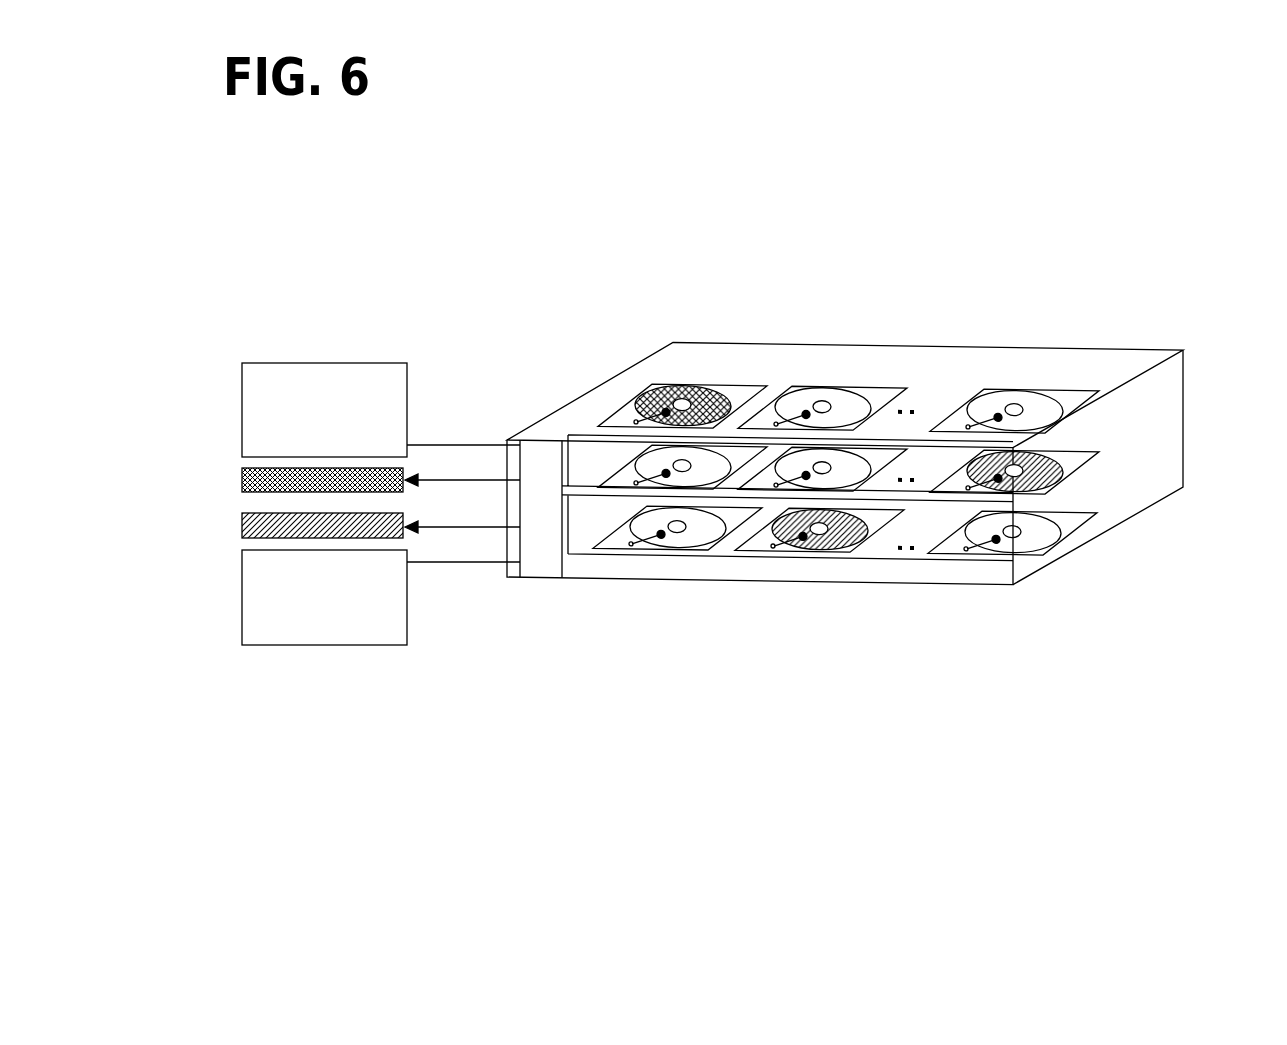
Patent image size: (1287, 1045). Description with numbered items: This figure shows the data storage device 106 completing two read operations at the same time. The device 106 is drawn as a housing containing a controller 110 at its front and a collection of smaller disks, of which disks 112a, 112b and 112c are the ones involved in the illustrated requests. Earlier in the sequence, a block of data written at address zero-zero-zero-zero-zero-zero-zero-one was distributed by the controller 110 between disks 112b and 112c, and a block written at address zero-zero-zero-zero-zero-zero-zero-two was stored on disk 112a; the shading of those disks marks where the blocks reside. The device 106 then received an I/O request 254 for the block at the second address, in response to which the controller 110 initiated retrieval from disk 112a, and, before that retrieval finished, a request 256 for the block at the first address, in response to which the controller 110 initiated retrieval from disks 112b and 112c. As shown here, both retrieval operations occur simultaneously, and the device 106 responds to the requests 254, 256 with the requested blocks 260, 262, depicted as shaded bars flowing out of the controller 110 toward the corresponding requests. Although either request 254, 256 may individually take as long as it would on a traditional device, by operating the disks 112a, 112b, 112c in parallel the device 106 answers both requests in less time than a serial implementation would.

The device 106 is at (1160, 589).
The controller 110 is at (540, 575).
The disk 112a is at (703, 383).
The disk 112b is at (1082, 446).
The disk 112c is at (825, 548).
The I/O request 254 is at (323, 363).
The request 256 is at (320, 645).
The requested block 260 is at (242, 523).
The requested block 262 is at (242, 468).